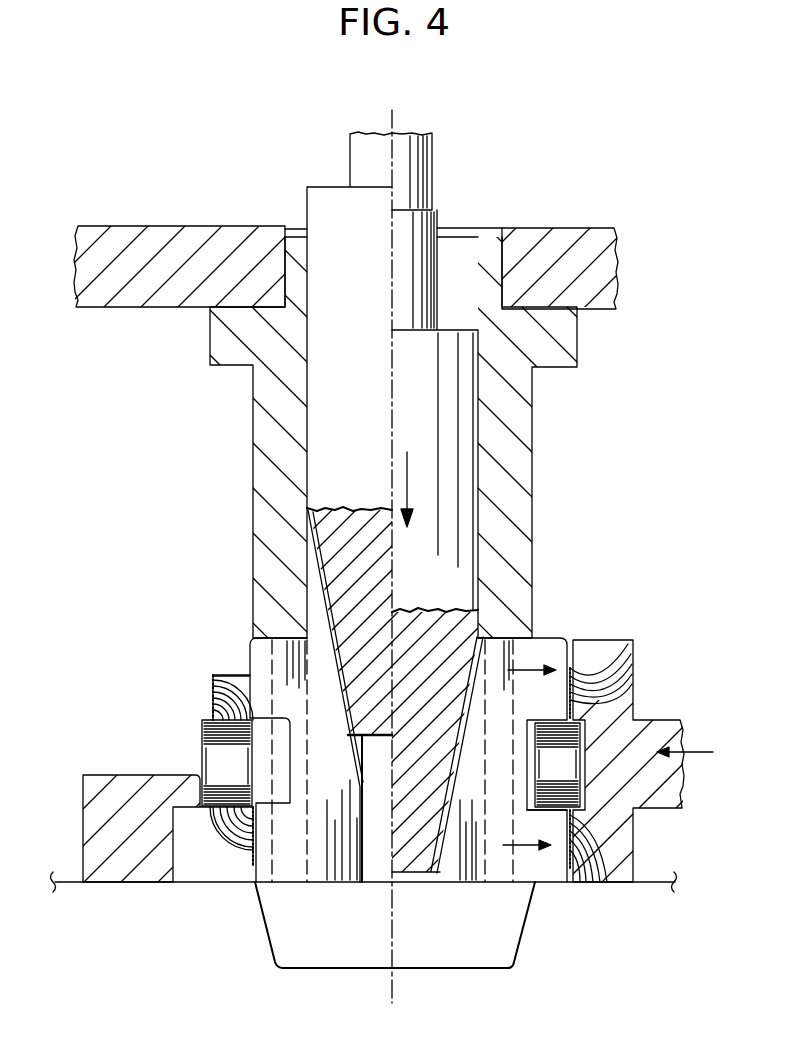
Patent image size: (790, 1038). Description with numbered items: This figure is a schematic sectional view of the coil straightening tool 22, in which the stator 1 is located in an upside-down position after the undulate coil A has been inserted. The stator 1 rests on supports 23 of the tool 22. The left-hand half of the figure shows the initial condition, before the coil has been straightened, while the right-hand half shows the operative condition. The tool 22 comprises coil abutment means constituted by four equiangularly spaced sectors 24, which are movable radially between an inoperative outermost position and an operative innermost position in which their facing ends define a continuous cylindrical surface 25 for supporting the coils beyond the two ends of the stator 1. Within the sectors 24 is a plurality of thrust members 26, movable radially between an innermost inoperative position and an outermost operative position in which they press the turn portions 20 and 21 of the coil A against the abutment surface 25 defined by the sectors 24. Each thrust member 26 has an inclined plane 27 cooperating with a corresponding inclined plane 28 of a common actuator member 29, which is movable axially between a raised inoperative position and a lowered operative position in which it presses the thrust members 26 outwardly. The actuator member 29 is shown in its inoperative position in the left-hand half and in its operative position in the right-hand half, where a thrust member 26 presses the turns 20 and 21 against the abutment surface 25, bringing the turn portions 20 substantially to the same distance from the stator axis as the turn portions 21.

The stator 1 is at (188, 751).
The turn portions 20 is at (213, 698).
The turn portions 21 is at (258, 855).
The coil straightening tool 22 is at (189, 660).
The supports 23 is at (112, 815).
The sectors 24 is at (617, 697).
The cylindrical surface 25 is at (562, 656).
The thrust members 26 is at (537, 886).
The inclined plane 27 is at (450, 745).
The inclined plane 28 is at (496, 690).
The actuator member 29 is at (347, 555).
The coil A is at (235, 668).